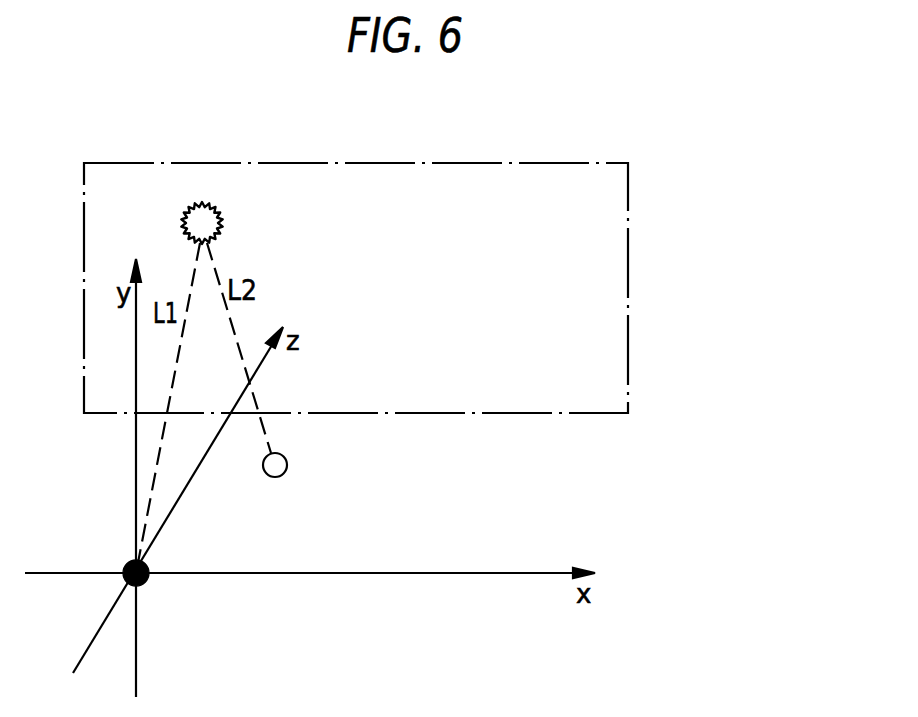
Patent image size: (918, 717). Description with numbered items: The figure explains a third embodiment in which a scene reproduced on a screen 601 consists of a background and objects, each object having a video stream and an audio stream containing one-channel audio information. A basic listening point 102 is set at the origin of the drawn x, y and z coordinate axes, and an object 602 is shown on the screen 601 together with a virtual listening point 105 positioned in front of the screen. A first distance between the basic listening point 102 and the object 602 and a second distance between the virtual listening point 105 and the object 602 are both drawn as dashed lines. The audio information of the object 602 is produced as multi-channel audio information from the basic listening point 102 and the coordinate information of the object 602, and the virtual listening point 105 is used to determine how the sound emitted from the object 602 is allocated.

The screen 601 is at (630, 233).
The object 602 is at (222, 232).
The virtual listening point 105 is at (286, 470).
The basic listening point 102 is at (147, 564).